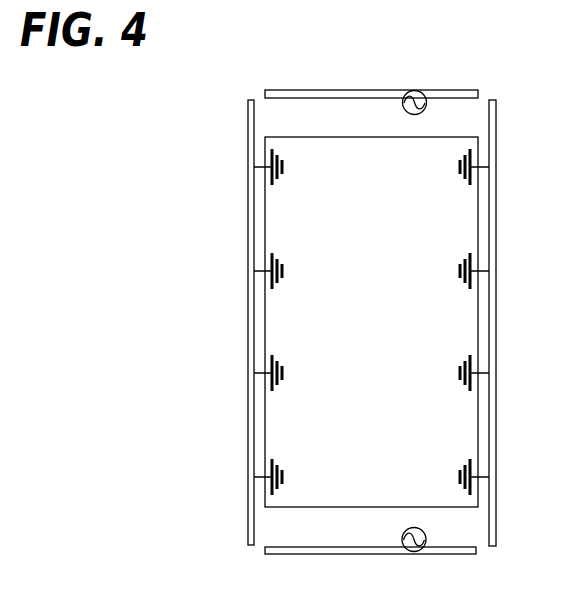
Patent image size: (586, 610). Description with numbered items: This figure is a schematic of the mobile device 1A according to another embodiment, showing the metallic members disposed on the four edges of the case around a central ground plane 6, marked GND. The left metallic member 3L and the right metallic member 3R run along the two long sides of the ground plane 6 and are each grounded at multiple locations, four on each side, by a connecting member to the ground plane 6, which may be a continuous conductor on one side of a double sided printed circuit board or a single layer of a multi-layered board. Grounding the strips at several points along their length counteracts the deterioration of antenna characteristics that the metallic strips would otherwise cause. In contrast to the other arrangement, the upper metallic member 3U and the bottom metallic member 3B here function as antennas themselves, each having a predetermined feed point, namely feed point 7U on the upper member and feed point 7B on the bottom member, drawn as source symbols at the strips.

The mobile device 1A is at (384, 71).
The upper metallic member 3U is at (336, 89).
The left metallic member 3L is at (247, 318).
The right metallic member 3R is at (496, 317).
The bottom metallic member 3B is at (328, 555).
The ground plane 6 is at (472, 224).
The feed point 7U is at (427, 98).
The feed point 7B is at (427, 533).